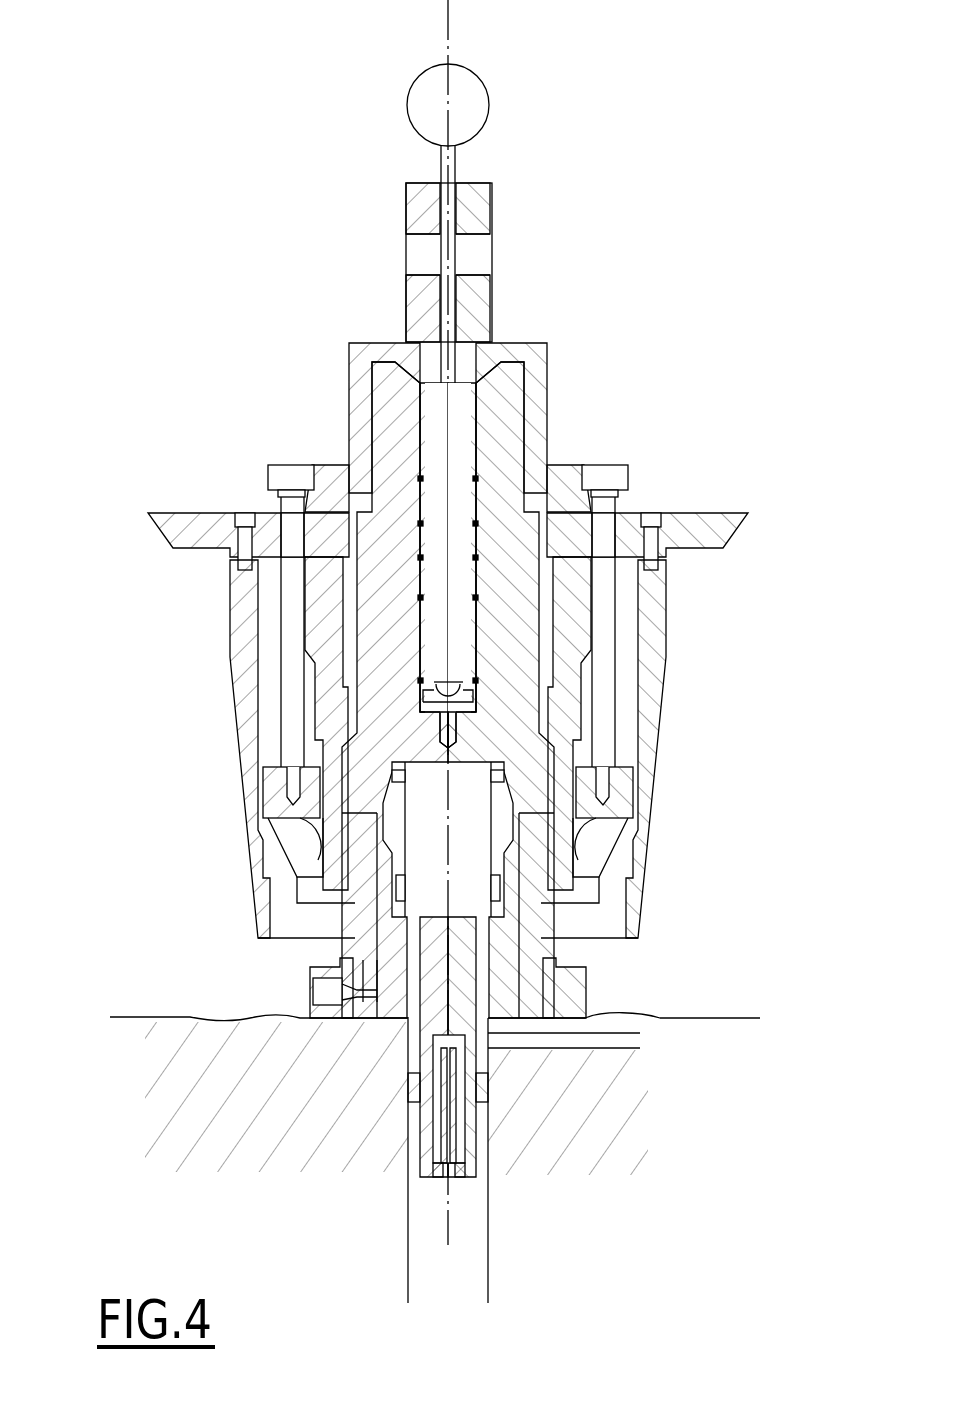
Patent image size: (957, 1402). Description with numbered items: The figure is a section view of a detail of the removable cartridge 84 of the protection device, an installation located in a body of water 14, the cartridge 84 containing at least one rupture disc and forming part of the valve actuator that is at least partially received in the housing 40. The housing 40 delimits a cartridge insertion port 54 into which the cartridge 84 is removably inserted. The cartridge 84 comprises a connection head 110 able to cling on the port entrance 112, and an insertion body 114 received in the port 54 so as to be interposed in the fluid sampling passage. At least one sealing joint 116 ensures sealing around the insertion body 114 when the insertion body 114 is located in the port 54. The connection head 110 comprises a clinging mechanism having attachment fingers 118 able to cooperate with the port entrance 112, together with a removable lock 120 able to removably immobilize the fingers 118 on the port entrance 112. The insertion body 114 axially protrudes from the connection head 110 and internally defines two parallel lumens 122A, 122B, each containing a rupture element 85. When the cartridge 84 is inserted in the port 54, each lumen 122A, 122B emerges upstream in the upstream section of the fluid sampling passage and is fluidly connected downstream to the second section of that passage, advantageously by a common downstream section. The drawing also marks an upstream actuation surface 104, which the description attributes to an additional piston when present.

The body of water 14 is at (81, 340).
The housing 40 is at (166, 1016).
The cartridge insertion port 54 is at (358, 1257).
The removable cartridge 84 is at (260, 324).
The rupture element 85 is at (437, 1178).
The upstream actuation surface 104 is at (620, 322).
The connection head 110 is at (182, 656).
The port entrance 112 is at (572, 996).
The insertion body 114 is at (440, 990).
The sealing joint 116 is at (500, 892).
The attachment fingers 118 is at (566, 788).
The removable lock 120 is at (290, 793).
The lumen 122A is at (438, 1127).
The lumen 122B is at (462, 1135).